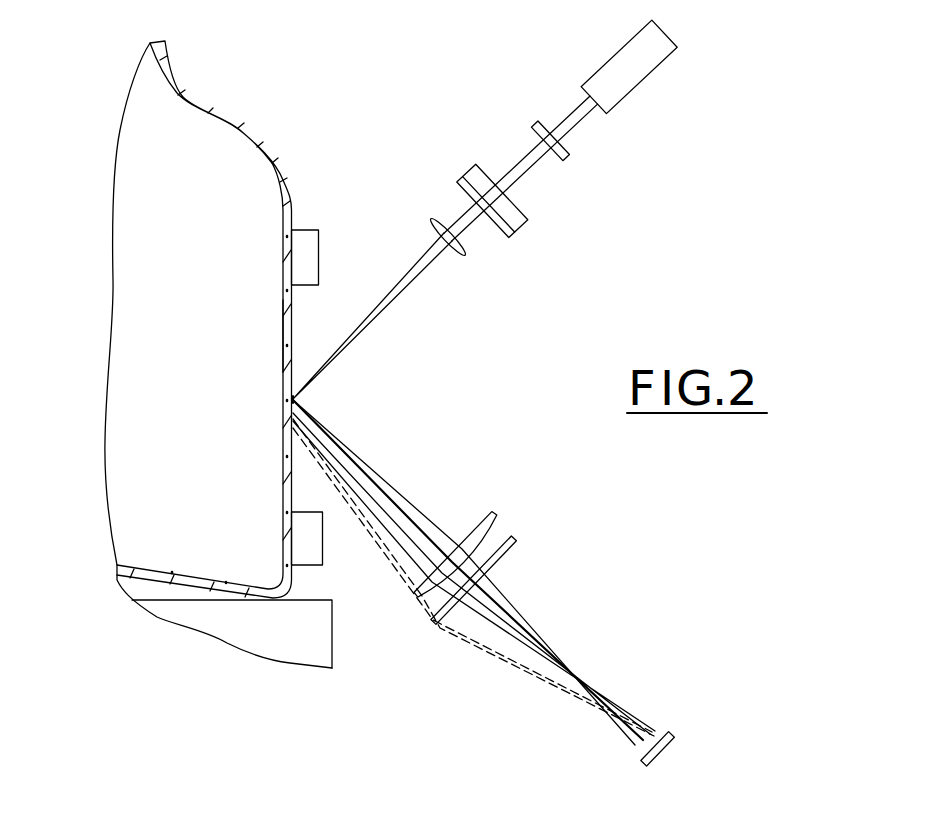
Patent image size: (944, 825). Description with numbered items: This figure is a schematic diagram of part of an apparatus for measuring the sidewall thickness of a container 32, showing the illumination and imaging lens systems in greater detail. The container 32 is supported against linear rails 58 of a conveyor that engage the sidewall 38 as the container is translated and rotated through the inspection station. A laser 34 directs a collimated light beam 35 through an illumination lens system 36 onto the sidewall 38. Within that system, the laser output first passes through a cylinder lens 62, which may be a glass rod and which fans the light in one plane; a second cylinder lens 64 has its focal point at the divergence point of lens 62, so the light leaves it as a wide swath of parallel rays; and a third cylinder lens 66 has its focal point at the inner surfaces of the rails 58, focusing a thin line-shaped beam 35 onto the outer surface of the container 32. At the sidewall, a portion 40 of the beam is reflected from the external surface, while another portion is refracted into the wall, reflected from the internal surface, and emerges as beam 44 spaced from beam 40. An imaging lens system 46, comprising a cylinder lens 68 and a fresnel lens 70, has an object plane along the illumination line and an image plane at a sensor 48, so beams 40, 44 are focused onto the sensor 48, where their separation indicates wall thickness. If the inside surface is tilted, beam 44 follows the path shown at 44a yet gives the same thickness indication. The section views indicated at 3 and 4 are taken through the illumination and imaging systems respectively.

The container 32 is at (250, 118).
The linear rails 58 is at (307, 237).
The sidewall 38 is at (287, 333).
The illumination lens system 36 is at (503, 91).
The laser 34 is at (637, 88).
The cylinder lens 62 is at (568, 150).
The second cylinder lens 64 is at (518, 230).
The third cylinder lens 66 is at (460, 258).
The light beam 35 is at (313, 388).
The reflected portion of illumination beam 40 is at (320, 423).
The reflected light beam 44 is at (322, 443).
The path of reflected light beam 44a is at (517, 670).
The cylinder lens 68 is at (493, 518).
The fresnel lens 70 is at (515, 548).
The sensor 48 is at (670, 733).
The imaging lens system 46 is at (494, 411).
The view arrow for FIG. 3 is at (440, 144).
The view arrow for FIG. 4 is at (520, 498).